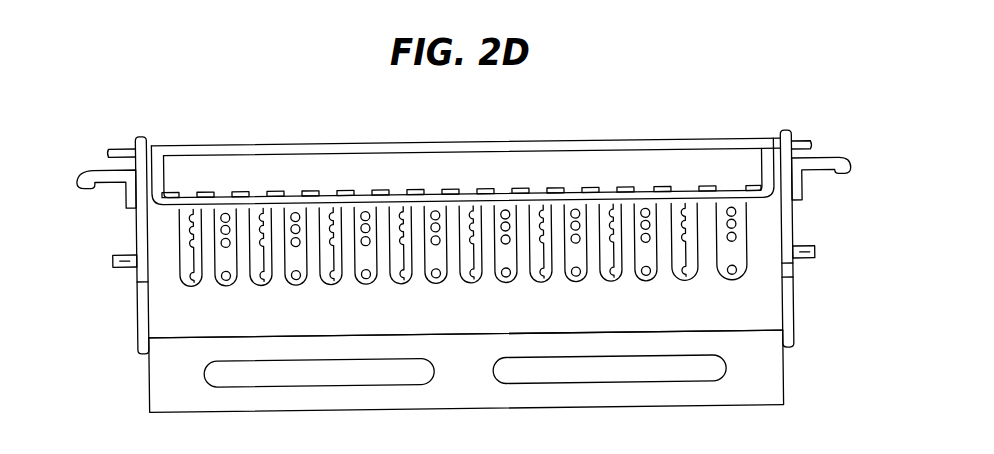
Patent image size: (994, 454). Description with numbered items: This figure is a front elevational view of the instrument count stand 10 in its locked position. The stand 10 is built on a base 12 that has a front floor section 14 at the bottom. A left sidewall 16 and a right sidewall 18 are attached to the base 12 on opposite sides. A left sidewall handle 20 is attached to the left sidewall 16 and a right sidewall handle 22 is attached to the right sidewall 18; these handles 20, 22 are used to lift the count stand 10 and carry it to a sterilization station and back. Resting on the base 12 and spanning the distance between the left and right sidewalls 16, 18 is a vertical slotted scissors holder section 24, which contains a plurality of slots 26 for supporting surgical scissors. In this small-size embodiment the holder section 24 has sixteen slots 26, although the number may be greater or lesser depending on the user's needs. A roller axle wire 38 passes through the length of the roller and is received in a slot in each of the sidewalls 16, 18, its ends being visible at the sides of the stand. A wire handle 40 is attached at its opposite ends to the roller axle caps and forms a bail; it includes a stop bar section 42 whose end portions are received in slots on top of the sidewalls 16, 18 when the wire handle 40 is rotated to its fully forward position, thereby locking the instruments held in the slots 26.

The instrument count stand 10 is at (226, 98).
The base 12 is at (752, 392).
The front floor section 14 is at (608, 333).
The left sidewall 16 is at (797, 221).
The right sidewall 18 is at (137, 326).
The left sidewall handle 20 is at (842, 156).
The right sidewall handle 22 is at (91, 166).
The vertical slotted scissors holder section 24 is at (466, 322).
The slots 26 is at (325, 287).
The roller axle wire 38 is at (113, 259).
The wire handle 40 is at (261, 199).
The stop bar section 42 is at (574, 142).